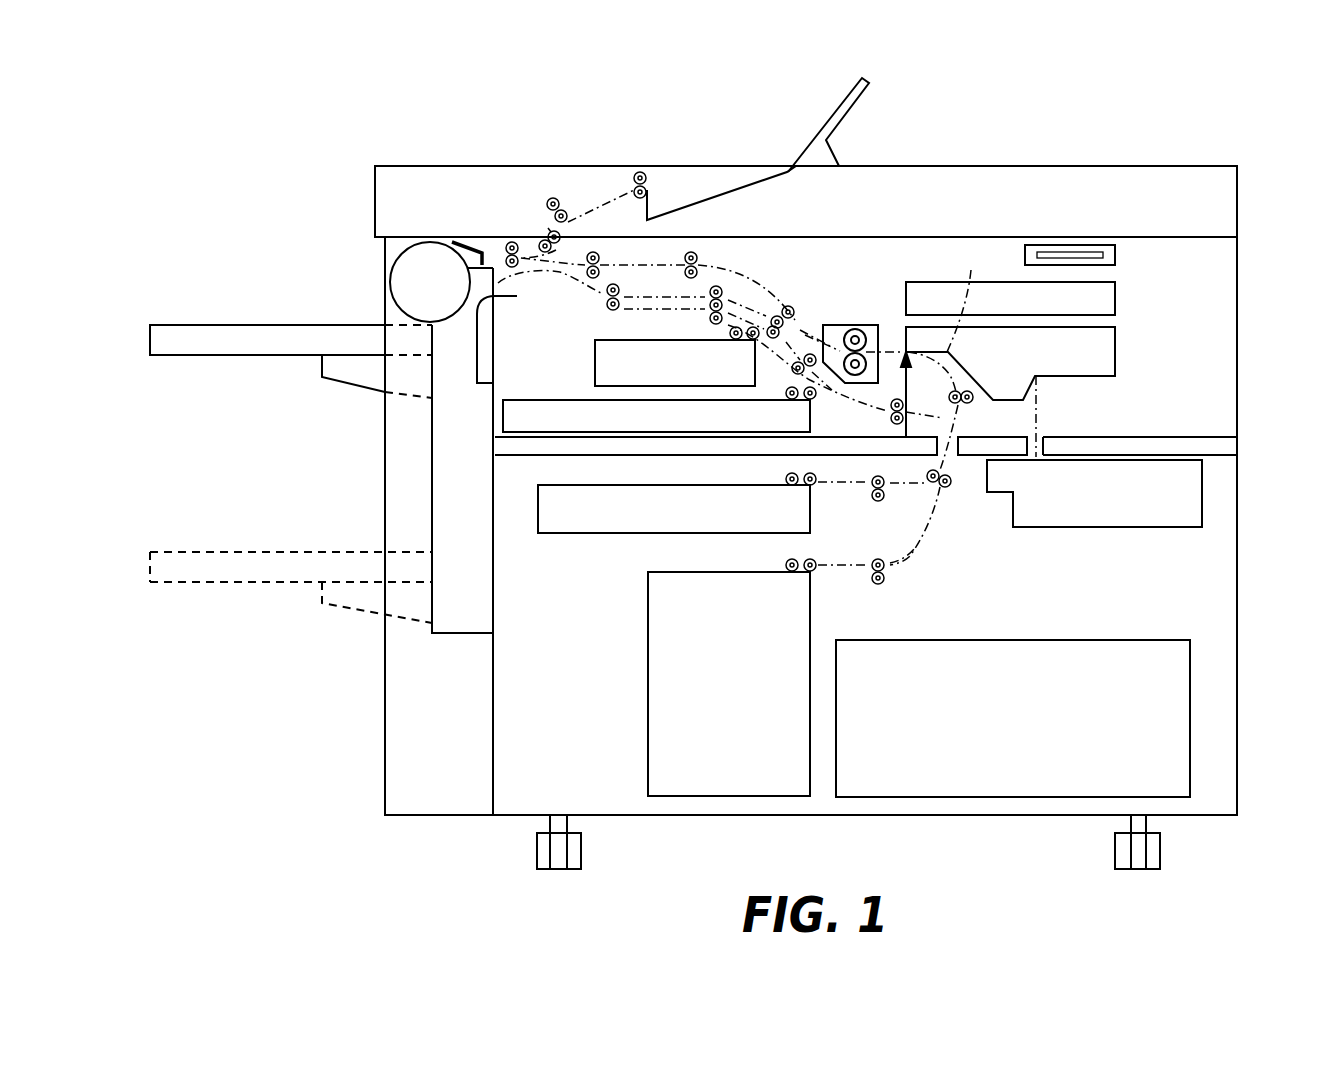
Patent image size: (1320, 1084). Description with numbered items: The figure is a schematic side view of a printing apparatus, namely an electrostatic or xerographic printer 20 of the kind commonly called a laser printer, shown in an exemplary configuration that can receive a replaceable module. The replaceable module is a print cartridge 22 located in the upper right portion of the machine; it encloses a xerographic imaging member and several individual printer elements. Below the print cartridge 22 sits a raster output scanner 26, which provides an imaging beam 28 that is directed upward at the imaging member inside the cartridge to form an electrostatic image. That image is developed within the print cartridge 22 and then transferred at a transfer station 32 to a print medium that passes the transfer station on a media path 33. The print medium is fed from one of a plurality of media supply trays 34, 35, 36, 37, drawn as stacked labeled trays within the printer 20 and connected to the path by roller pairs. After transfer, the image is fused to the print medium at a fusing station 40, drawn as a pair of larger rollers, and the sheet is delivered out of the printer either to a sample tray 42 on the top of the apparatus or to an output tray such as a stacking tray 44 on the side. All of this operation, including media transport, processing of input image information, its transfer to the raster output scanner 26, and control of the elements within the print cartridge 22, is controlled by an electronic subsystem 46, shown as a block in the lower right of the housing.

The xerographic printer 20 is at (1053, 141).
The print cartridge 22 is at (1118, 352).
The raster output scanner 26 is at (1108, 527).
The imaging beam 28 is at (1040, 408).
The transfer station 32 is at (906, 437).
The media path 33 is at (970, 295).
The media supply tray 34 is at (648, 683).
The media supply tray 35 is at (578, 537).
The media supply tray 36 is at (556, 400).
The media supply tray 37 is at (593, 362).
The fusing station 40 is at (850, 325).
The sample tray 42 is at (825, 121).
The stacking tray 44 is at (275, 325).
The electronic subsystem 46 is at (1003, 640).